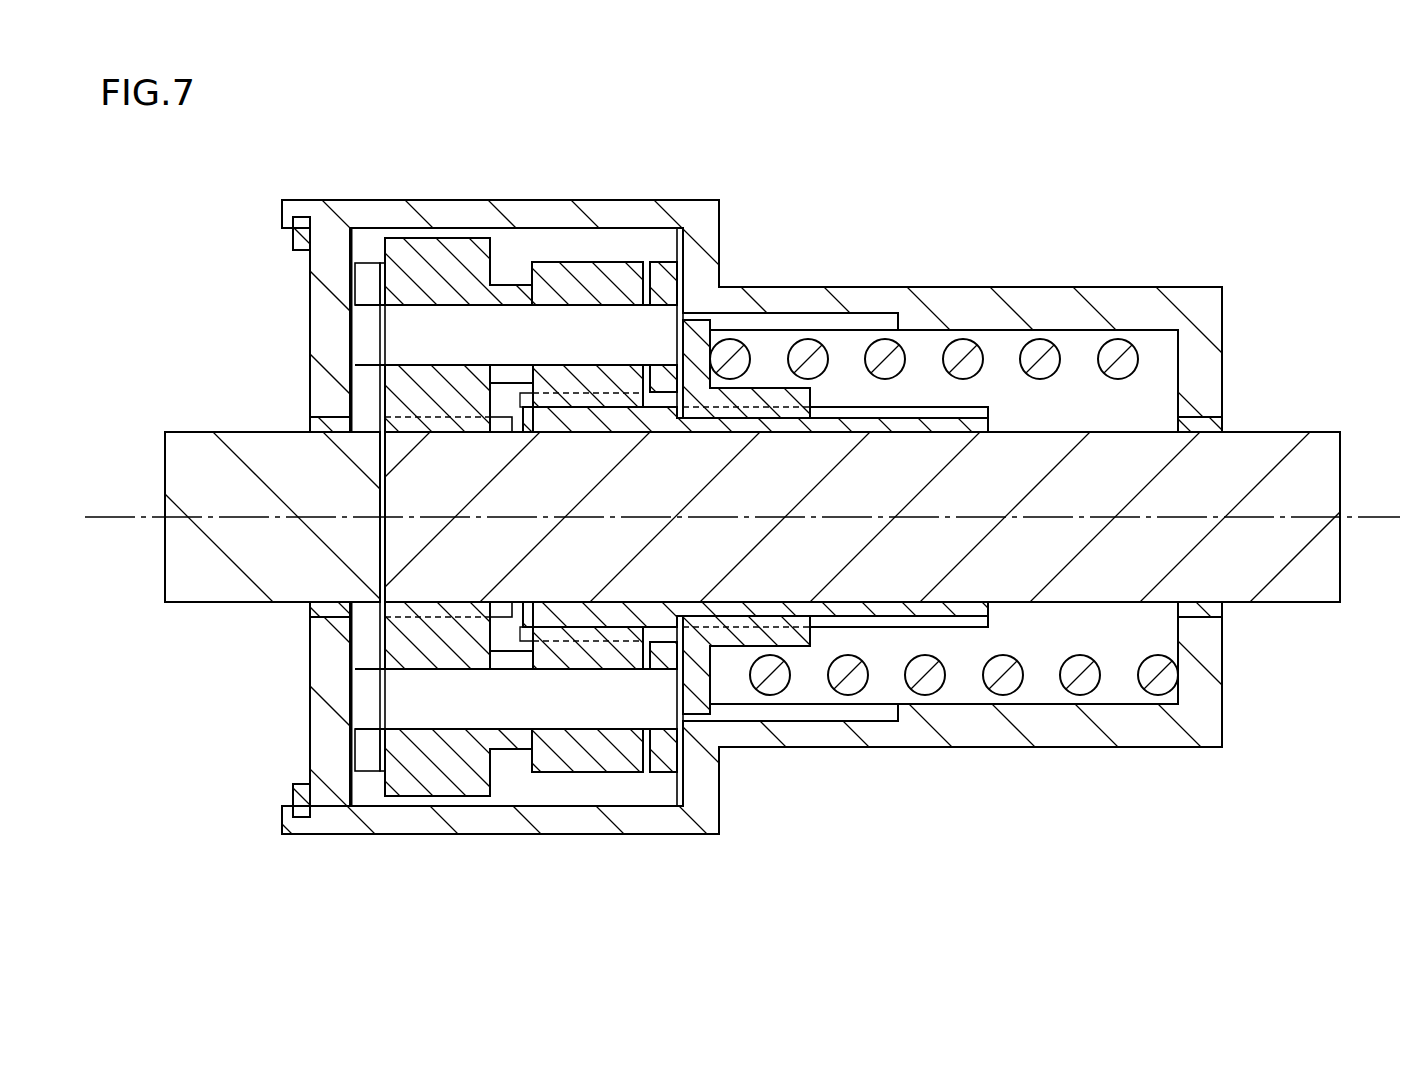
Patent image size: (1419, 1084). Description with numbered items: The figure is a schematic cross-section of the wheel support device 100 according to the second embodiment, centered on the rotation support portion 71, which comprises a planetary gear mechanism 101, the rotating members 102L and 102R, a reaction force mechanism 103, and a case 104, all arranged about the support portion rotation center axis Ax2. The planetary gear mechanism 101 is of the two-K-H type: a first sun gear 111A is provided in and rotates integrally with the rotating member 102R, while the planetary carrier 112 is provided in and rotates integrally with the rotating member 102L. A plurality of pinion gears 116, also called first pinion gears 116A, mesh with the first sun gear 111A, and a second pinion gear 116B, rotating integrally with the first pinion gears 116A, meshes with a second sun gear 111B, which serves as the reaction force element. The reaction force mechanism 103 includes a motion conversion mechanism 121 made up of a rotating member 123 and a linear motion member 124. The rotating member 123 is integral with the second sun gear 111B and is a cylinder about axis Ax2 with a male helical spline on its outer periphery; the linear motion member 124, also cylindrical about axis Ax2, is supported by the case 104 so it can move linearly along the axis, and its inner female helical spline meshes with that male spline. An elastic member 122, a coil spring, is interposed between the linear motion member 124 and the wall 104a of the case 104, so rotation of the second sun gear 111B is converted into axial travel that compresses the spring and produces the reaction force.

The rotation transmission device 100 is at (1246, 132).
The planetary gear mechanism 101 is at (448, 258).
The second pinion gear 116B is at (613, 262).
The motion conversion mechanism 121 is at (930, 464).
The linear motion member 124 is at (773, 388).
The rotating member 123 is at (920, 407).
The reaction force mechanism 103 is at (944, 465).
The elastic member 122 is at (962, 345).
The rotation support portion 71 is at (709, 517).
The case 104 is at (1147, 285).
The wall 104a is at (1210, 365).
The rotating member 102L is at (196, 432).
The rotating member 102R is at (1280, 432).
The support portion rotation center axis Ax2 is at (1383, 517).
The planetary carrier 112 is at (367, 757).
The pinion gears 116 is at (482, 864).
The first pinion gears 116A is at (447, 803).
The first sun gear 111A is at (503, 607).
The second sun gear 111B is at (583, 607).